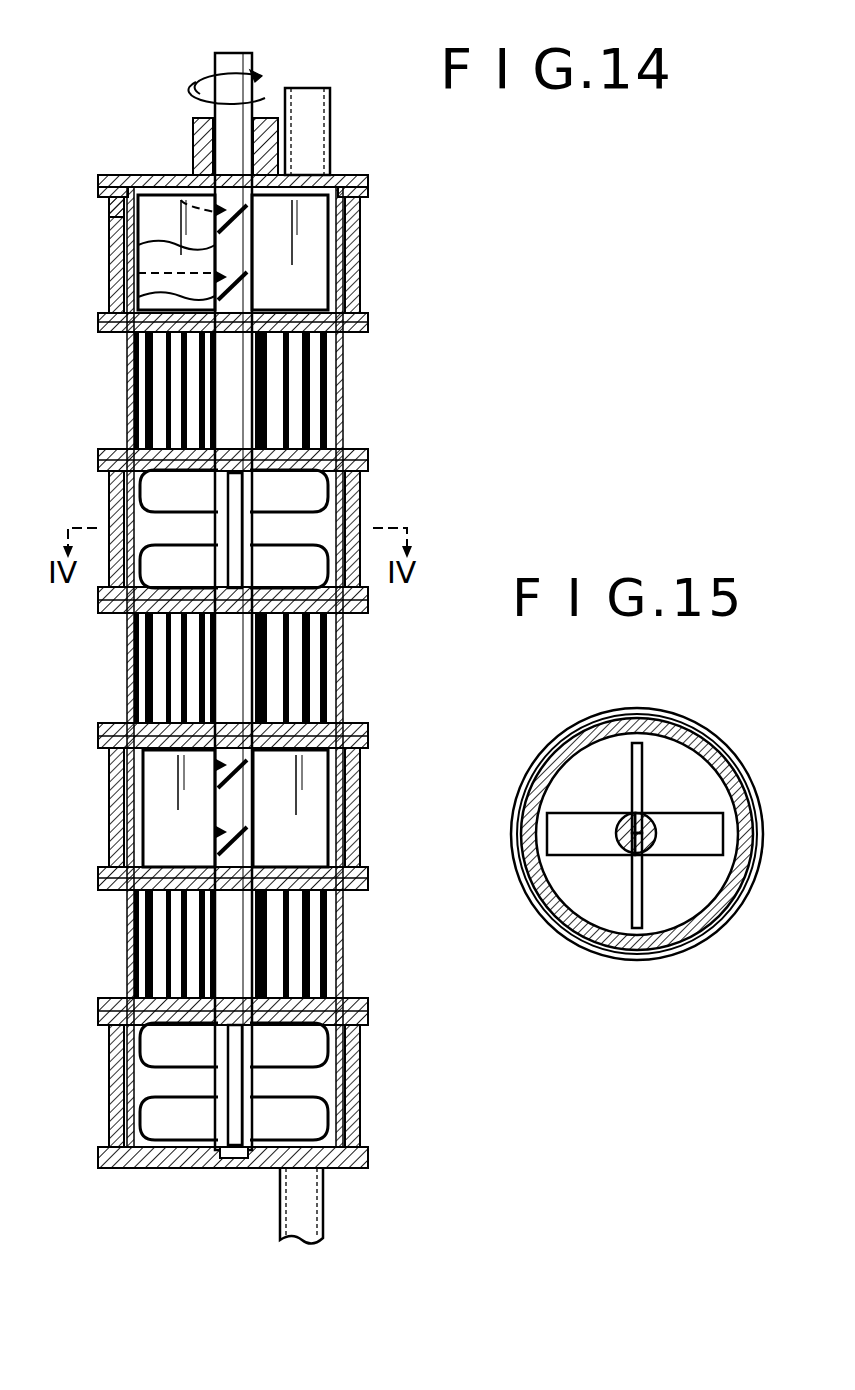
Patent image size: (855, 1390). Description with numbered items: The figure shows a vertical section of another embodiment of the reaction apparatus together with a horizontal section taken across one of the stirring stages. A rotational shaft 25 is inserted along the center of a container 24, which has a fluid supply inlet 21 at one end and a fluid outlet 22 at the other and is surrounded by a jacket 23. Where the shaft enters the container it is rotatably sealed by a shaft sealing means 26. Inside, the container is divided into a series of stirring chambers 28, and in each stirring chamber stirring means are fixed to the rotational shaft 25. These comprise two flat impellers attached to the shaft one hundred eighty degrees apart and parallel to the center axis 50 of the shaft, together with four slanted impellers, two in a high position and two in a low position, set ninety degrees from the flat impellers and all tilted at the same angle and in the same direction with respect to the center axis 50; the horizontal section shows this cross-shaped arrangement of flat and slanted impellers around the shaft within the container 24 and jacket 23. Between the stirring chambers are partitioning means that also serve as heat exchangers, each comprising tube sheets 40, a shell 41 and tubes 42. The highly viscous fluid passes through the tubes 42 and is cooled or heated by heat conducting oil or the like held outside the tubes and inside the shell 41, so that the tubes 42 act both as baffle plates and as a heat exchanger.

In FIG. 14, the fluid supply inlet 21 is at (282, 1222).
In FIG. 14, the fluid outlet 22 is at (316, 86).
In FIG. 14, the jacket 23 is at (360, 292).
In FIG. 15, the jacket 23 is at (514, 780).
In FIG. 14, the container 24 is at (343, 250).
In FIG. 15, the container 24 is at (525, 832).
In FIG. 14, the rotational shaft 25 is at (253, 62).
In FIG. 15, the rotational shaft 25 is at (620, 822).
In FIG. 14, the shaft sealing means 26 is at (194, 118).
In FIG. 14, the stirring chamber 28 is at (110, 208).
In FIG. 14, the tube sheet 40 is at (364, 334).
In FIG. 14, the shell 41 is at (343, 385).
In FIG. 14, the tube 42 is at (327, 420).
In FIG. 14, the center axis 50 is at (233, 53).